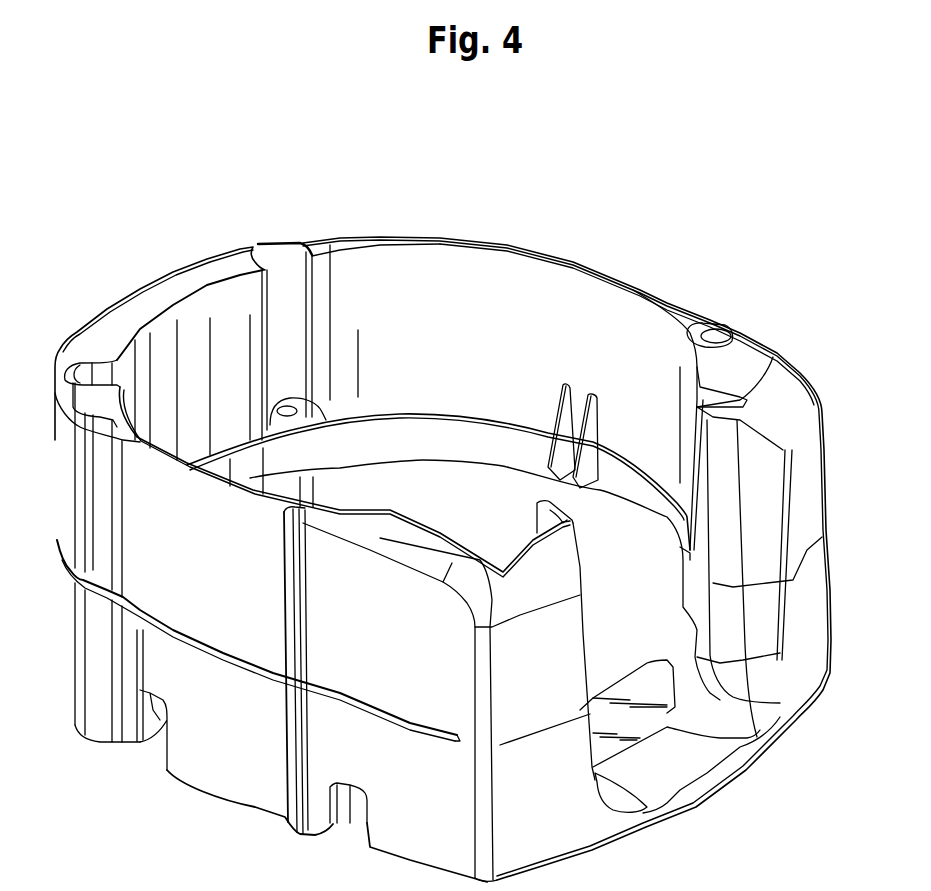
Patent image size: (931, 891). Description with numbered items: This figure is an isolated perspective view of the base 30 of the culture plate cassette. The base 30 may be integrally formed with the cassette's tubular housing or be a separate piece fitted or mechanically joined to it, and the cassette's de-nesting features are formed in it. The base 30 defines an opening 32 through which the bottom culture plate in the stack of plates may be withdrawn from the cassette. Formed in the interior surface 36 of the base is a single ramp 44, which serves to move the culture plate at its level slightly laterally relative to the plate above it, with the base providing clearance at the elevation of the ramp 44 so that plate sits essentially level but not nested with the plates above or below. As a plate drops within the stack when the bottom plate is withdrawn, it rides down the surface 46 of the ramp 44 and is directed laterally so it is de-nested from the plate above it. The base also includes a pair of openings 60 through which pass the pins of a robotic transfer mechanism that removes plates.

The base 30 is at (805, 607).
The opening 32 is at (447, 480).
The interior surface 36 is at (518, 282).
The ramp 44 is at (582, 393).
The surface 46 is at (557, 413).
The openings 60 is at (160, 743).